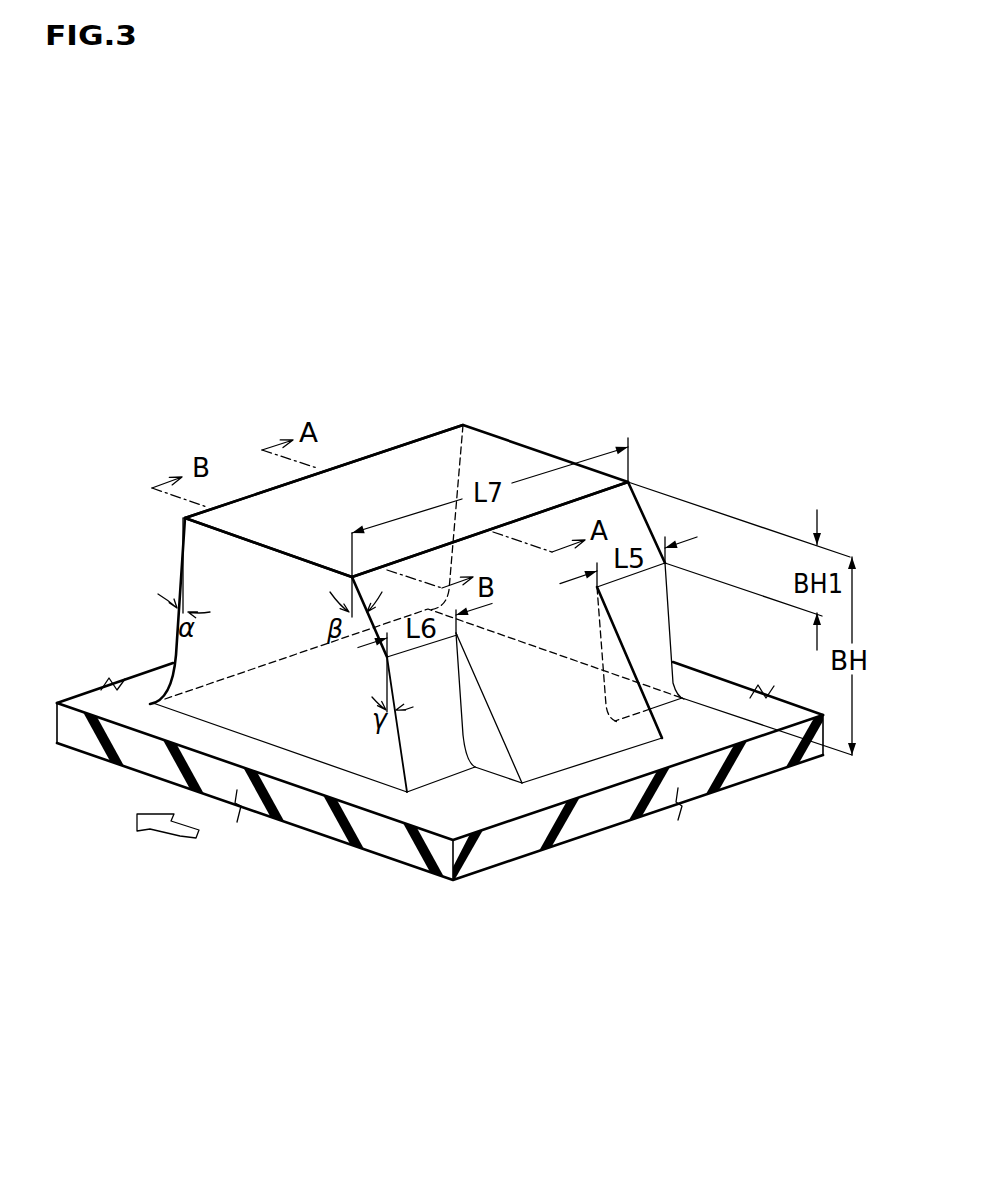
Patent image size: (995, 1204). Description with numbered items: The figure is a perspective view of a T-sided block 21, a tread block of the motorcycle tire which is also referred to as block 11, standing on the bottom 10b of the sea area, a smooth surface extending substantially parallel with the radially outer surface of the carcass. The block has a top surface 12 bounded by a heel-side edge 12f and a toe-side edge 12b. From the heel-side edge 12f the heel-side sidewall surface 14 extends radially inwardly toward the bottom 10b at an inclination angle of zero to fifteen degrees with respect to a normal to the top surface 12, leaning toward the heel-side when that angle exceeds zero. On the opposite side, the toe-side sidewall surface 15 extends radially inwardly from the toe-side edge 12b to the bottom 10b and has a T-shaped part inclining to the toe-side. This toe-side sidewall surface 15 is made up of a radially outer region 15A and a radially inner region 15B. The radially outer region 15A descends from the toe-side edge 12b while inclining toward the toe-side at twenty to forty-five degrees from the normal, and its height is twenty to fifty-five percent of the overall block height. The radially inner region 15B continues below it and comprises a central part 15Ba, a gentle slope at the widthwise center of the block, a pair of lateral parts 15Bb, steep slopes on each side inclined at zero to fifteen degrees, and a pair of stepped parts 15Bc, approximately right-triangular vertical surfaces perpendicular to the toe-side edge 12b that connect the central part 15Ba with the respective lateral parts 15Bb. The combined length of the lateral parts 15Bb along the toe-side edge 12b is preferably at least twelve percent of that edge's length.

The bottom of the sea area 10b is at (350, 790).
The die block (punch) 11 is at (488, 663).
The T-sided block 21 is at (488, 663).
The top surface 12 is at (430, 476).
The heel-side edge 12f is at (365, 455).
The toe-side edge 12b is at (587, 497).
The heel-side sidewall surface 14 is at (270, 518).
The toe-side sidewall surface 15 is at (589, 806).
The radially outer region 15A is at (493, 572).
The radially inner region 15B is at (603, 783).
The central part 15Ba is at (587, 703).
The lateral parts 15Bb is at (422, 747).
The stepped parts 15Bc is at (495, 745).